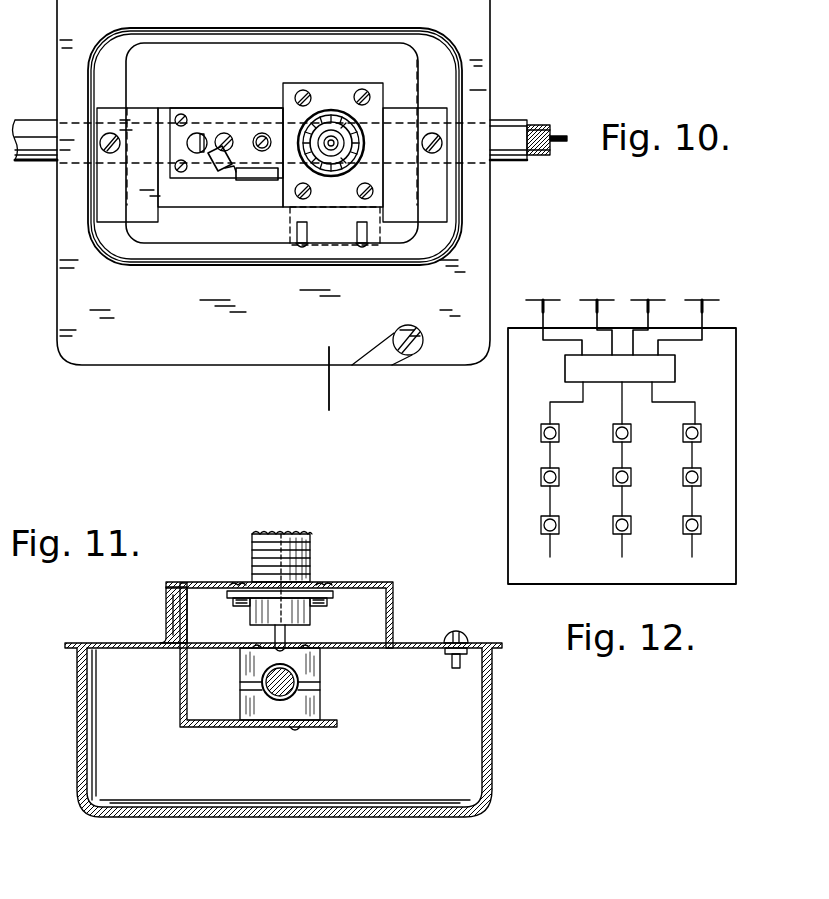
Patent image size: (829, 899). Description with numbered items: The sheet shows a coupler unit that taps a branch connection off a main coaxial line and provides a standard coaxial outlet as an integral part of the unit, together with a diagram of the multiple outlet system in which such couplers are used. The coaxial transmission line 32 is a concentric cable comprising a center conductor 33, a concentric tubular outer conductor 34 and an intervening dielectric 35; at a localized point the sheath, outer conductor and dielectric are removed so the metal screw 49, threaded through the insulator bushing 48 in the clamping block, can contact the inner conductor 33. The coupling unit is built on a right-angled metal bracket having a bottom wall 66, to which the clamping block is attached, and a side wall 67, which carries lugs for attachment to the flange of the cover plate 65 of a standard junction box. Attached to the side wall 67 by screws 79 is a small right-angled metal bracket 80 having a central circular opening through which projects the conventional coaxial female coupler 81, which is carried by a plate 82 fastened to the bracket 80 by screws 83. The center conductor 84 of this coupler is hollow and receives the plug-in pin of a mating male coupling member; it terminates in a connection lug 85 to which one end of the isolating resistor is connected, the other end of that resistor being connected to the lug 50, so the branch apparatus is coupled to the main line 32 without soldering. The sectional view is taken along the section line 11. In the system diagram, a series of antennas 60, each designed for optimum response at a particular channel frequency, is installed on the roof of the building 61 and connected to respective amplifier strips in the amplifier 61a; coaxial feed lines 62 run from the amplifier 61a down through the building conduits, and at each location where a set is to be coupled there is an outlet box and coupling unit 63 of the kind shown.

In FIG. 10, the section line 11 is at (333, 398).
In FIG. 10, the coaxial transmission line 32 is at (510, 118).
In FIG. 11, the coaxial transmission line 32 is at (302, 681).
In FIG. 10, the center conductor 33 is at (560, 134).
In FIG. 10, the outer conductor 34 is at (540, 156).
In FIG. 10, the dielectric 35 is at (552, 148).
In FIG. 10, the insulator bushing 48 is at (172, 121).
In FIG. 10, the metal screw 49 is at (200, 135).
In FIG. 10, the lug 50 is at (213, 150).
In FIG. 12, the antennas 60 is at (694, 296).
In FIG. 12, the building 61 is at (750, 352).
In FIG. 12, the amplifier 61a is at (564, 368).
In FIG. 12, the coaxial feed lines 62 is at (583, 398).
In FIG. 12, the outlet box and coupling unit 63 is at (560, 440).
In FIG. 10, the cover plate 65 is at (472, 253).
In FIG. 11, the bottom wall 66 is at (228, 728).
In FIG. 11, the side wall 67 is at (180, 688).
In FIG. 10, the screws 79 is at (307, 250).
In FIG. 11, the screws 79 is at (166, 612).
In FIG. 10, the right-angled metal bracket 80 is at (375, 83).
In FIG. 11, the right-angled metal bracket 80 is at (340, 592).
In FIG. 10, the coaxial female coupler 81 is at (322, 110).
In FIG. 11, the coaxial female coupler 81 is at (250, 542).
In FIG. 11, the plate 82 is at (270, 602).
In FIG. 10, the screws 83 is at (308, 199).
In FIG. 11, the screws 83 is at (248, 586).
In FIG. 10, the center conductor 84 is at (334, 136).
In FIG. 11, the center conductor 84 is at (292, 528).
In FIG. 11, the connection lug 85 is at (288, 638).